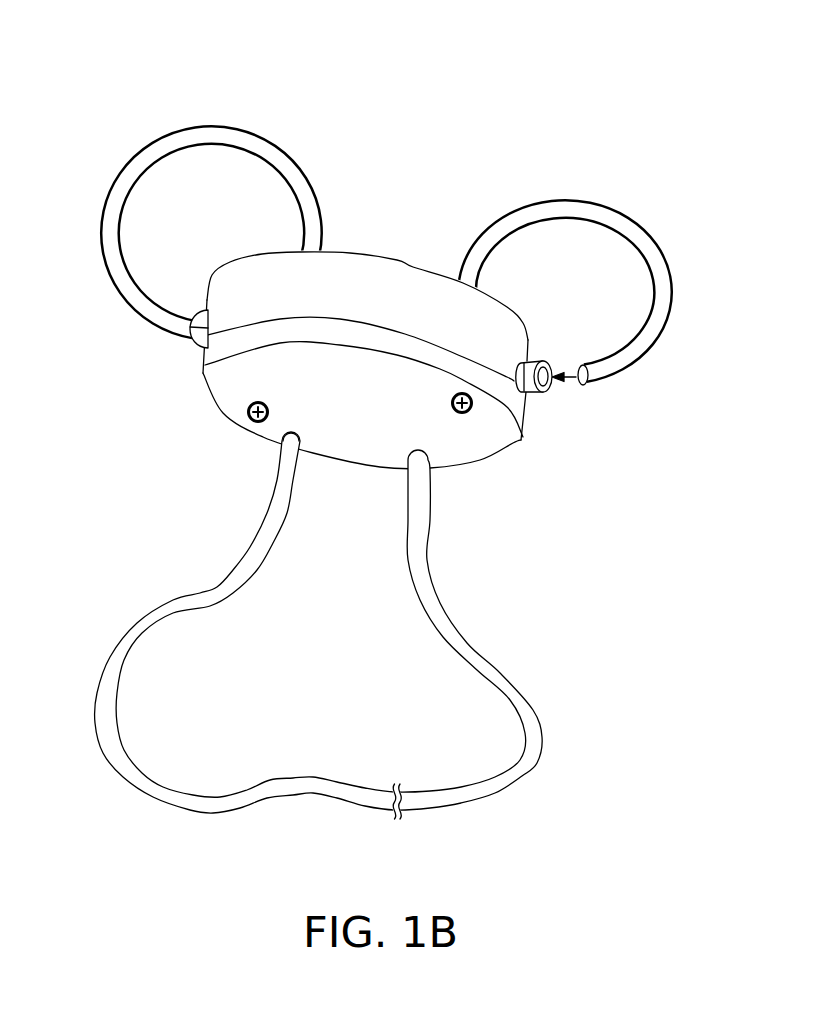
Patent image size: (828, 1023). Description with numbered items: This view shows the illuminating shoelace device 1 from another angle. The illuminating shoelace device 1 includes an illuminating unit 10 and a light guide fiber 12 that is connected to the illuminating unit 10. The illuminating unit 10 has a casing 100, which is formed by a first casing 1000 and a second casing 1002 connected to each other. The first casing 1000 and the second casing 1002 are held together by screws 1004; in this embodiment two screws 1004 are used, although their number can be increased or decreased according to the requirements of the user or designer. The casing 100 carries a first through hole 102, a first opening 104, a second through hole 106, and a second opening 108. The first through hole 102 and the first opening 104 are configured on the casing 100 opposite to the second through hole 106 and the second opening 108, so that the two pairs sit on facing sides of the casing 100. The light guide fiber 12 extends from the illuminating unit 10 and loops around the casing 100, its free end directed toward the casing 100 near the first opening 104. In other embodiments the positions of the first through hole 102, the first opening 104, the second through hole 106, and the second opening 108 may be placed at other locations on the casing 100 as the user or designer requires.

The illuminating shoelace device 1 is at (337, 60).
The illuminating unit 10 is at (430, 186).
The light guide fiber 12 is at (590, 201).
The casing 100 is at (370, 252).
The first through hole 102 is at (402, 462).
The first opening 104 is at (530, 392).
The second through hole 106 is at (275, 436).
The second opening 108 is at (186, 345).
The first casing 1000 is at (522, 313).
The second casing 1002 is at (522, 442).
The screws 1004 is at (248, 412).